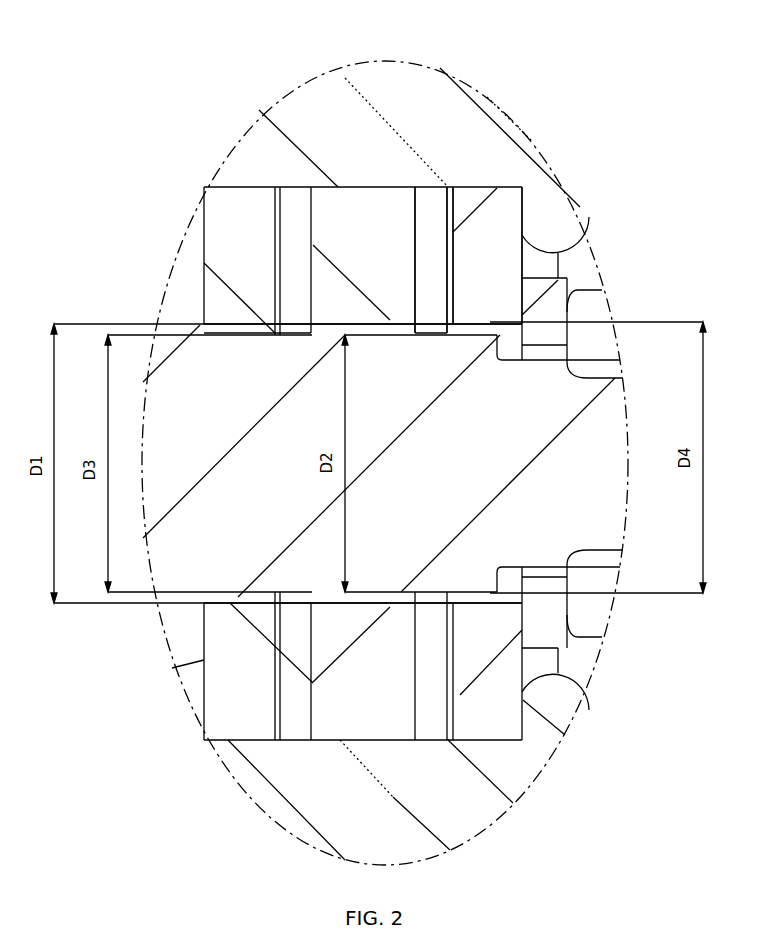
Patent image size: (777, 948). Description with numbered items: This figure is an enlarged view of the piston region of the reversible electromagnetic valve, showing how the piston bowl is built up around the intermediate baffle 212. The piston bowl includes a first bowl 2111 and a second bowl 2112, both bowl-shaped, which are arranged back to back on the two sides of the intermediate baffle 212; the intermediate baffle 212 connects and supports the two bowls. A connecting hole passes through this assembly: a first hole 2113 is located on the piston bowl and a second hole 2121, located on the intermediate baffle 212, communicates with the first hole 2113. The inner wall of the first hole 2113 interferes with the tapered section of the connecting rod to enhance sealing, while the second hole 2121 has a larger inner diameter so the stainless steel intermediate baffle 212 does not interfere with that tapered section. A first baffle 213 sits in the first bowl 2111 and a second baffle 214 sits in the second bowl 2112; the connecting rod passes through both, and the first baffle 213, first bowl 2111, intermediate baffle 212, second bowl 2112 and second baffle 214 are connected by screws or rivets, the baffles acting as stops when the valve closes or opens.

The intermediate baffle 212 is at (362, 218).
The first bowl 2111 is at (293, 208).
The second bowl 2112 is at (428, 205).
The first hole 2113 is at (292, 333).
The second hole 2121 is at (318, 322).
The first baffle 213 is at (222, 235).
The second baffle 214 is at (475, 235).